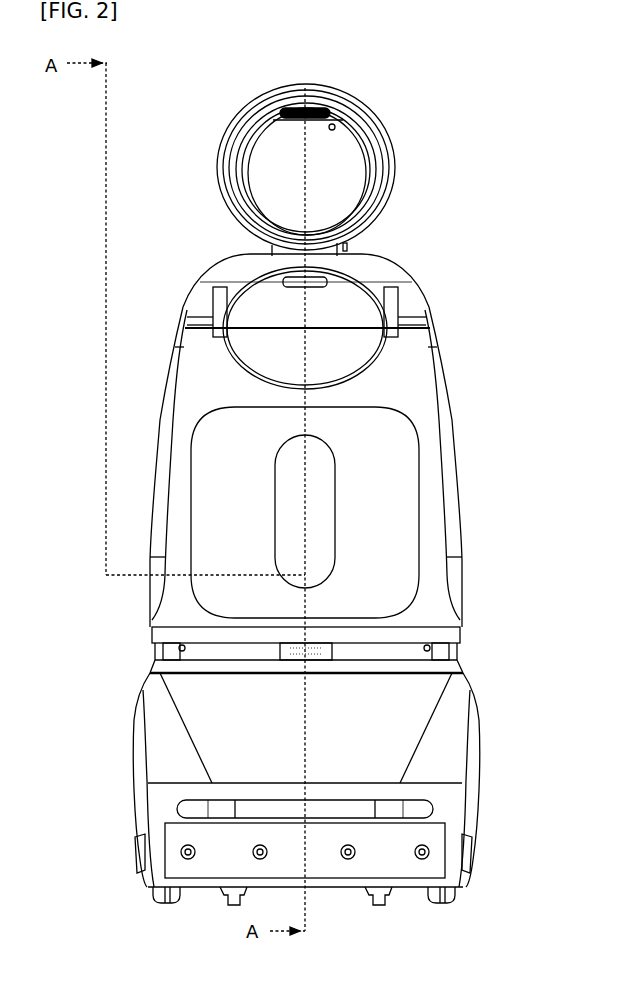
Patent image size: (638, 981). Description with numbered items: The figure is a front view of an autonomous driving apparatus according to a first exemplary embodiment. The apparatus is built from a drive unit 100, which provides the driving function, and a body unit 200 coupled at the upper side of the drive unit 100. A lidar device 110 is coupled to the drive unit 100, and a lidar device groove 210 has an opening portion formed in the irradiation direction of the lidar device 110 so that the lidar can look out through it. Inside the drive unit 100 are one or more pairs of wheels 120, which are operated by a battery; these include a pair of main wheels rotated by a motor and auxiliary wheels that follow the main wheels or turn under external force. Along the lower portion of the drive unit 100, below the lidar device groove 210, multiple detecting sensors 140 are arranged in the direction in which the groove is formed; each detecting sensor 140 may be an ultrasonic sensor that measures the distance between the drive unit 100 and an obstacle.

The drive unit 100 is at (148, 748).
The lidar device 110 is at (325, 655).
The wheels 120 is at (455, 898).
The detecting sensors 140 is at (426, 852).
The body unit 200 is at (452, 505).
The lidar device groove 210 is at (170, 651).